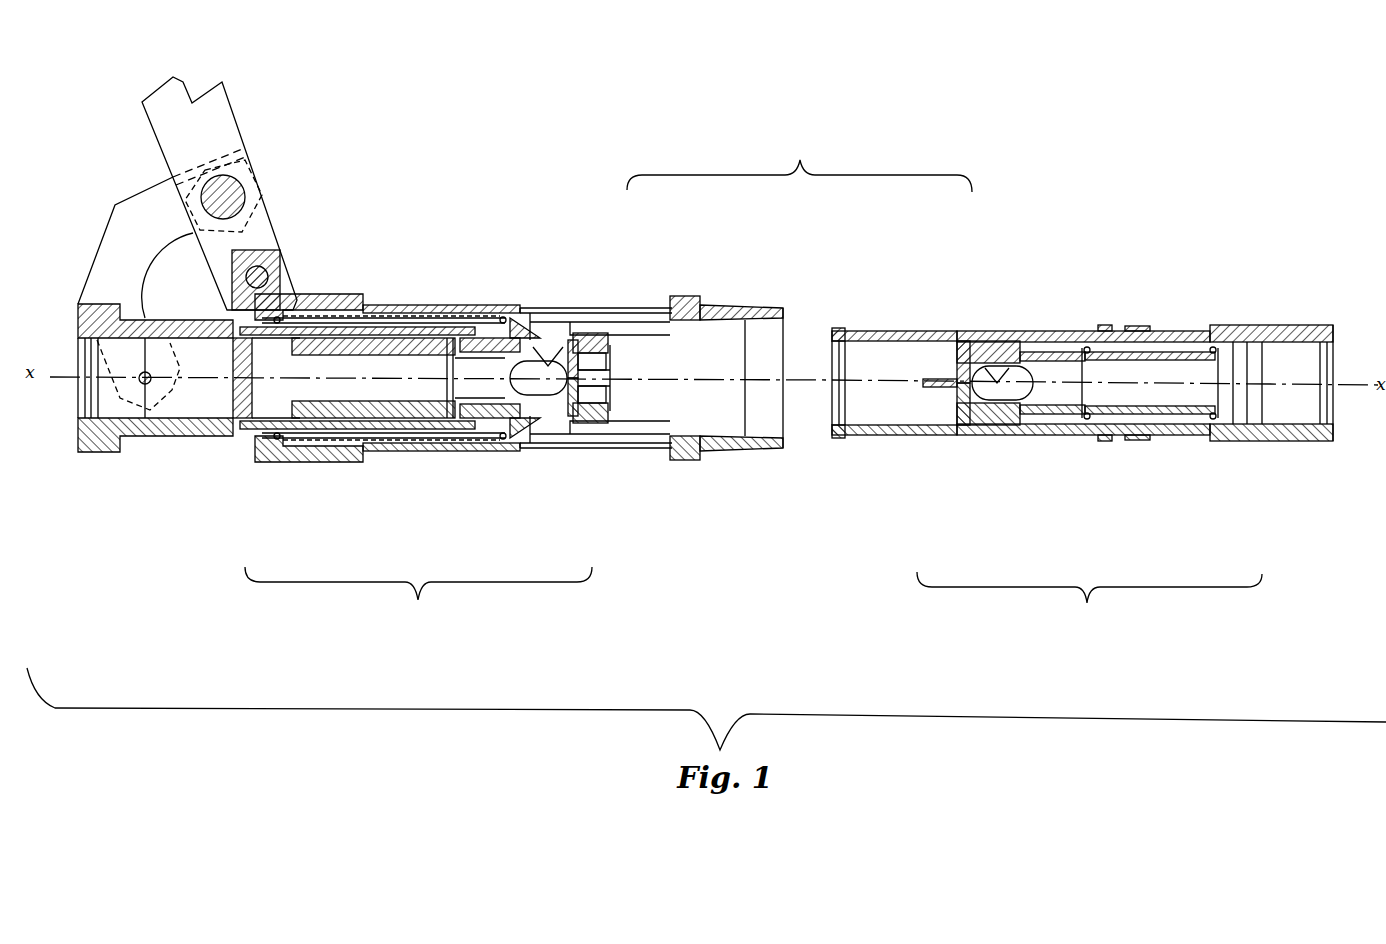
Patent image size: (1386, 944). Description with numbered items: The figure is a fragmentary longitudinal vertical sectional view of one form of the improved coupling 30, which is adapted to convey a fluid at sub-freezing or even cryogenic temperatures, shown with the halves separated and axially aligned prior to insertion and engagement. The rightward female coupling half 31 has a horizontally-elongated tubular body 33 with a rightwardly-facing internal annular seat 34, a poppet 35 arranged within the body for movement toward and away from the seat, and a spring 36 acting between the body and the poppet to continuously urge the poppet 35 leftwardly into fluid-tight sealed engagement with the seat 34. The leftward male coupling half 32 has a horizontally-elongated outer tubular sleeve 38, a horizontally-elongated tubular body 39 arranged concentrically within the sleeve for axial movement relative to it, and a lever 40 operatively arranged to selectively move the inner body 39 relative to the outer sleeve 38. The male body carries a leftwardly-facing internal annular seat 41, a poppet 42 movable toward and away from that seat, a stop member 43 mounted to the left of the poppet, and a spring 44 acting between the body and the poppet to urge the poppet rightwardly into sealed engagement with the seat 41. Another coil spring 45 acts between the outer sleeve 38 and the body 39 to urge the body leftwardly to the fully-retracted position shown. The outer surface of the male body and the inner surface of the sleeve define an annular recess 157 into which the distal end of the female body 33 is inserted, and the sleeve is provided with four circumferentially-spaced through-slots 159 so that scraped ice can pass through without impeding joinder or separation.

The coupling 30 is at (799, 159).
The female coupling half 31 is at (1089, 601).
The male coupling half 32 is at (418, 596).
The tubular body 33 is at (1065, 323).
The internal annular seat 34 is at (1017, 347).
The poppet 35 is at (993, 410).
The spring 36 is at (1155, 430).
The outer tubular sleeve 38 is at (435, 302).
The tubular body 39 is at (180, 432).
The lever 40 is at (273, 193).
The internal annular seat 41 is at (513, 323).
The poppet 42 is at (543, 407).
The stop member 43 is at (333, 413).
The spring 44 is at (368, 413).
The coil spring 45 is at (440, 440).
The annular recess 157 is at (570, 330).
The through-slots 159 is at (562, 318).